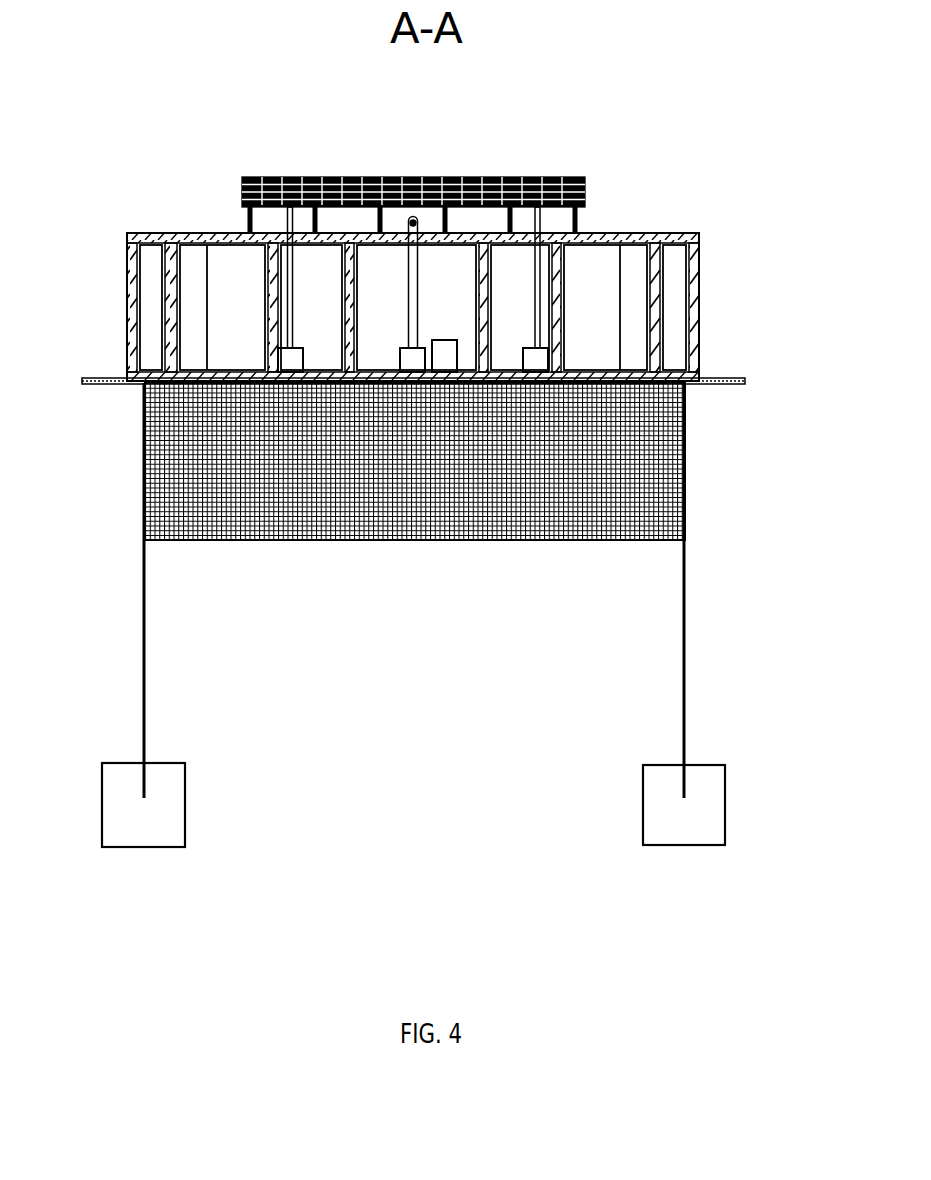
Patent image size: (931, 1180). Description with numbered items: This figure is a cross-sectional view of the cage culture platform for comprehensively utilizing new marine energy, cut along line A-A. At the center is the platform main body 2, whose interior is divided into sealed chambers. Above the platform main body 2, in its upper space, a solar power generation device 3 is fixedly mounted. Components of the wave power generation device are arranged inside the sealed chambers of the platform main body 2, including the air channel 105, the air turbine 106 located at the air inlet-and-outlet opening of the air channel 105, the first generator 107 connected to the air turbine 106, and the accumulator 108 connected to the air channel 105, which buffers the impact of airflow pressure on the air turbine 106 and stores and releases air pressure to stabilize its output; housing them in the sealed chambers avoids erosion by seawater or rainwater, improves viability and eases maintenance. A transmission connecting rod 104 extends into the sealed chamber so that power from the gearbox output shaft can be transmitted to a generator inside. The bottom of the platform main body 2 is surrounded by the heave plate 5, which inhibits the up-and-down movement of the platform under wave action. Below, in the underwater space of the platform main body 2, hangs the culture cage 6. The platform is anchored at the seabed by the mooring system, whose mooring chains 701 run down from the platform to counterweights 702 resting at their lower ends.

The platform main body 2 is at (593, 240).
The solar power generation device 3 is at (390, 177).
The heave plate 5 is at (713, 380).
The culture cage 6 is at (680, 517).
The transmission connecting rod 104 is at (537, 212).
The air channel 105 is at (445, 177).
The air turbine 106 is at (413, 358).
The first generator 107 is at (448, 347).
The accumulator 108 is at (292, 358).
The mooring chain 701 is at (683, 668).
The counterweight 702 is at (695, 798).